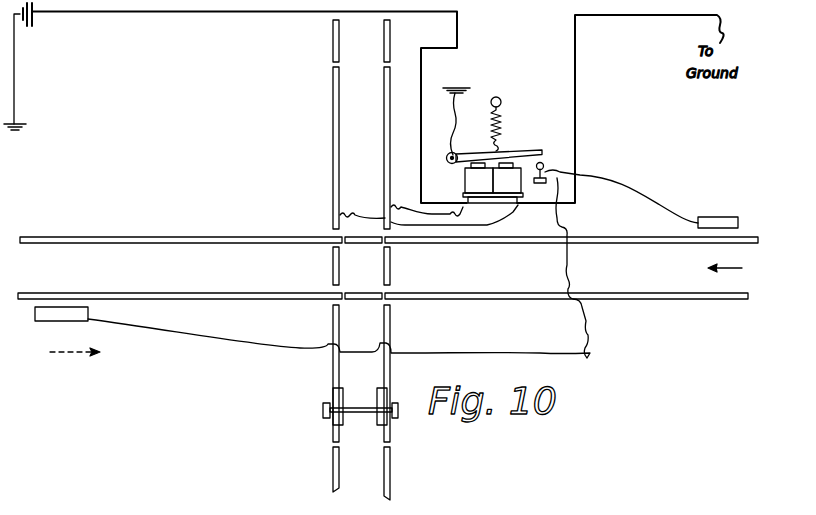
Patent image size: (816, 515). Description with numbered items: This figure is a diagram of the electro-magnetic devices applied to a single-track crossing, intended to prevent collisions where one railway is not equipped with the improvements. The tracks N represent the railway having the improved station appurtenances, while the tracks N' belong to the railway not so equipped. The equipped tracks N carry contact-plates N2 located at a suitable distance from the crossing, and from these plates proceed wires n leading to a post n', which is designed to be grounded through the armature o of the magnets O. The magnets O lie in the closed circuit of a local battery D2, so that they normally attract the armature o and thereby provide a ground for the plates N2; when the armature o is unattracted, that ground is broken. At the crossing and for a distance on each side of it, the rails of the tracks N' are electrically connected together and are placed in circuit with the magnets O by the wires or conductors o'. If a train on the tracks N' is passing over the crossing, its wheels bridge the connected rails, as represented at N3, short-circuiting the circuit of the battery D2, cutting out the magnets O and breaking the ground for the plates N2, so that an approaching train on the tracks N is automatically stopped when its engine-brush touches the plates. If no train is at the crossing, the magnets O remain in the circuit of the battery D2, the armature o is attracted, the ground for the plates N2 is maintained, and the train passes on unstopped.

The local battery D2 is at (37, 63).
The ground connection G is at (239, 110).
The tracks of a railway not equipped N' is at (343, 260).
The tracks of the equipped railway N is at (388, 254).
The contact-plates N2 is at (371, 259).
The wheels bridging the rails N3 is at (360, 416).
The wires n is at (393, 266).
The post n' is at (549, 170).
The armature o is at (495, 130).
The magnets O is at (493, 183).
The wires or conductors o' is at (434, 218).